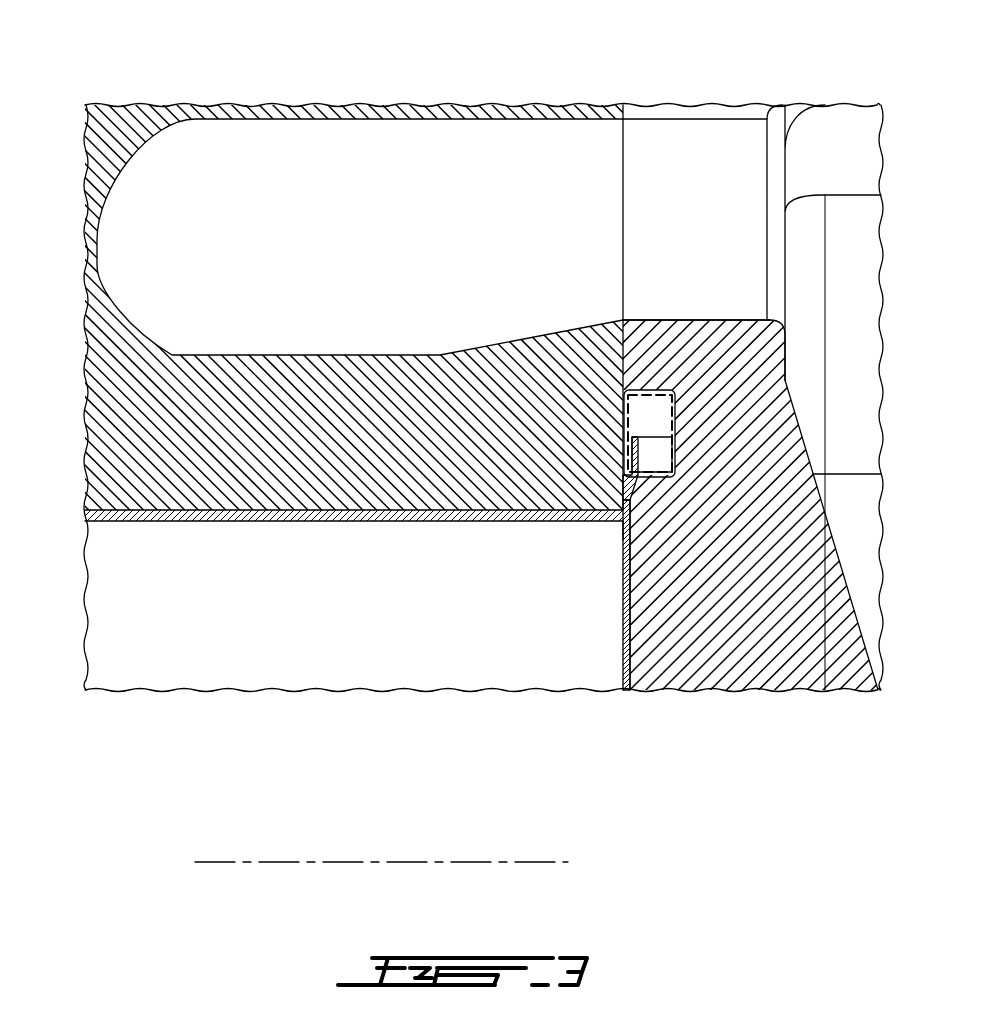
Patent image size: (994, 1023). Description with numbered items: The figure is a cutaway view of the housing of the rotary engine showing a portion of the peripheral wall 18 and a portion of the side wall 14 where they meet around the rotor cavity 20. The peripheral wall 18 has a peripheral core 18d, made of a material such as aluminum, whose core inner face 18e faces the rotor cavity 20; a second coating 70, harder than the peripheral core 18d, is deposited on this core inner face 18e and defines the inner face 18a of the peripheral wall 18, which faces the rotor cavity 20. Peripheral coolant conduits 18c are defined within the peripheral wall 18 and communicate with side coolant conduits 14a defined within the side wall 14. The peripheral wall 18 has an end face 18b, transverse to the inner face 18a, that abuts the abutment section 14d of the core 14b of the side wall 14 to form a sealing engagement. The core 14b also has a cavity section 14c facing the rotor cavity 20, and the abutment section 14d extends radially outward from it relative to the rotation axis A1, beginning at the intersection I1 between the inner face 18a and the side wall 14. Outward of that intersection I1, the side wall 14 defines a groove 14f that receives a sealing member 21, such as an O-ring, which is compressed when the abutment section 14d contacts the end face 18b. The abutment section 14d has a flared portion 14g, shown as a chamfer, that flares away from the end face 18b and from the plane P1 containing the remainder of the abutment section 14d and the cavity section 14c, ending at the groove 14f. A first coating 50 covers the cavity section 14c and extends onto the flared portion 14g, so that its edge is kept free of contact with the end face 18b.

The peripheral wall 18 is at (152, 434).
The inner face of the peripheral wall 18a is at (280, 522).
The end face of the peripheral wall 18b is at (620, 347).
The peripheral coolant conduit 18c is at (177, 167).
The peripheral core 18d is at (125, 372).
The core inner face 18e is at (233, 512).
The side wall 14 is at (785, 637).
The side coolant conduit 14a is at (750, 184).
The core of the side wall 14b is at (805, 664).
The cavity section 14c is at (631, 633).
The abutment section 14d is at (632, 330).
The groove 14f is at (676, 413).
The flared portion 14g is at (631, 491).
The rotor cavity 20 is at (278, 660).
The sealing member 21 is at (623, 413).
The first coating 50 is at (621, 616).
The second coating 70 is at (180, 513).
The plane P1 is at (626, 240).
The intersection I1 is at (622, 527).
The rotation axis A1 is at (412, 862).